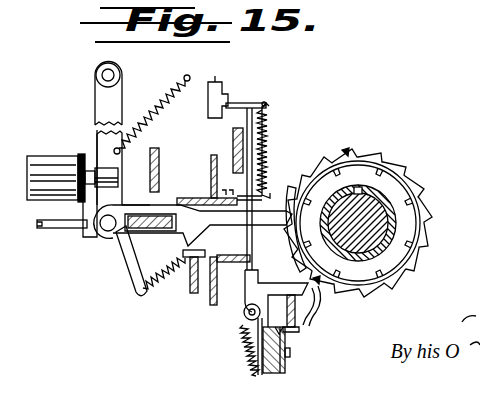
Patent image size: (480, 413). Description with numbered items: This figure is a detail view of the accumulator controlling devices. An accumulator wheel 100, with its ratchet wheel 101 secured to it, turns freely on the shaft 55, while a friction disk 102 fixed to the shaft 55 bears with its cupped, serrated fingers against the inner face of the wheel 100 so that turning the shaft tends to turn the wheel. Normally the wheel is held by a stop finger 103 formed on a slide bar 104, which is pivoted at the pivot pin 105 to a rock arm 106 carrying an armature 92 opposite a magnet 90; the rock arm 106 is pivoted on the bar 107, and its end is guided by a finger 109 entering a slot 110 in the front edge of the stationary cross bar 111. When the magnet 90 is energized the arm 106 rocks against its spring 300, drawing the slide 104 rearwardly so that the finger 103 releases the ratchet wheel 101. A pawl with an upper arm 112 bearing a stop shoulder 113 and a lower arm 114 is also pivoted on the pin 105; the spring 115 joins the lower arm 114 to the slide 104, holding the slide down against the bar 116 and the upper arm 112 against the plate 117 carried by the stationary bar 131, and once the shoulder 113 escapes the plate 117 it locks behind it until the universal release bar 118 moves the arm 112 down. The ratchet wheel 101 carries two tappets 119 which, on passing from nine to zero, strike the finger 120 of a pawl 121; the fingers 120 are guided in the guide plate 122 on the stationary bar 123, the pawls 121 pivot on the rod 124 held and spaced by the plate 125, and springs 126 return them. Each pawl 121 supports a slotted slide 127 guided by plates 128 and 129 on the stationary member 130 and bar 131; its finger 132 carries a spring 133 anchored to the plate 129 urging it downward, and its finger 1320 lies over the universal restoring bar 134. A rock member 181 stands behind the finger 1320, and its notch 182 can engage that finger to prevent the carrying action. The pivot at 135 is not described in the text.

The shaft 55 is at (368, 214).
The magnet 90 is at (50, 158).
The armature 92 is at (100, 170).
The accumulator wheel 100 is at (416, 222).
The ratchet wheel 101 is at (405, 270).
The friction disk 102 is at (405, 281).
The stop finger 103 is at (202, 225).
The slide bar 104 is at (145, 232).
The pivot pin 105 is at (100, 236).
The rock arm 106 is at (96, 102).
The bar 107 is at (102, 72).
The finger 109 is at (88, 238).
The slot 110 is at (72, 221).
The stationary cross bar 111 is at (40, 226).
The upper arm 112 is at (150, 206).
The stop shoulder 113 is at (180, 198).
The lower arm 114 is at (130, 266).
The spring 115 is at (146, 292).
The bar 116 is at (190, 286).
The plate 117 is at (211, 178).
The universal release bar 118 is at (153, 149).
The tappet 119 is at (350, 153).
The finger 120 is at (306, 298).
The pawl 121 is at (263, 300).
The guide plate 122 is at (298, 330).
The stationary bar 123 is at (278, 373).
The rod 124 is at (244, 313).
The plate 125 is at (257, 336).
The spring 126 is at (250, 353).
The slide 127 is at (247, 231).
The plate 128 is at (249, 256).
The plate 129 is at (292, 188).
The stationary member 130 is at (212, 296).
The stationary bar 131 is at (233, 150).
The finger 132 is at (268, 105).
The spring 133 is at (268, 118).
The universal restoring bar 134 is at (267, 136).
The pivot 135 is at (108, 232).
The rock member 181 is at (218, 82).
The notch 182 is at (208, 103).
The spring 300 is at (163, 95).
The finger 1320 is at (250, 103).